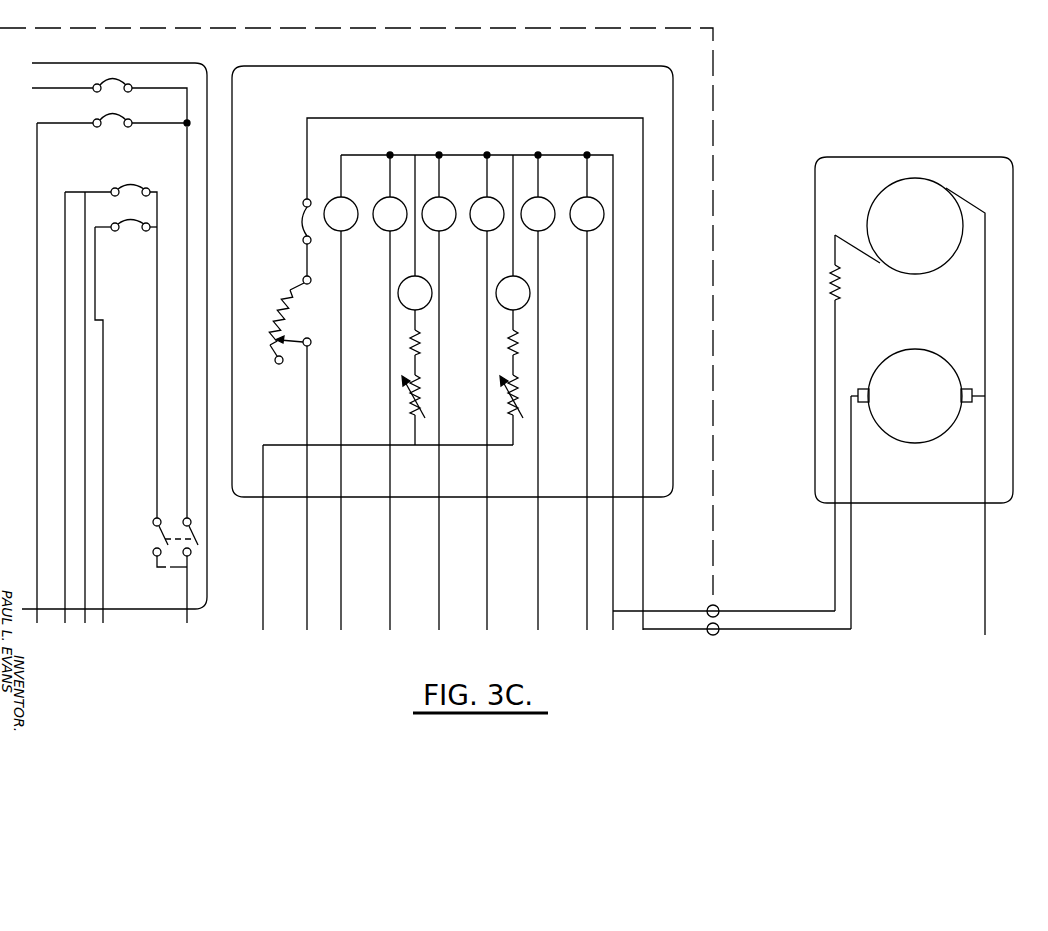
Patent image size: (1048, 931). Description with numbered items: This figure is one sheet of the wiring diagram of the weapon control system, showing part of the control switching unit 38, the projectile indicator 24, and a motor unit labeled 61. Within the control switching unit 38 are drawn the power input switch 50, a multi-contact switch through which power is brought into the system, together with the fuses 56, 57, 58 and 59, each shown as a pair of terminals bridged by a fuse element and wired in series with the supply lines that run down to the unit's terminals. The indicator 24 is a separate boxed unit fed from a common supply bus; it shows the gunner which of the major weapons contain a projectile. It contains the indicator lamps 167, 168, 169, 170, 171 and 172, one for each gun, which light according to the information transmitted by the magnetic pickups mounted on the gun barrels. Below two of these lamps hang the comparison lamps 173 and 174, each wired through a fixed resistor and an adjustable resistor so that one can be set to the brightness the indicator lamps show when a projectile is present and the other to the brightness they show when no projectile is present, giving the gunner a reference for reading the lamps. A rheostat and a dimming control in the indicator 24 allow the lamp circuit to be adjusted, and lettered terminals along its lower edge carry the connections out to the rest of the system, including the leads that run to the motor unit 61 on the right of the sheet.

The control switching unit 38 is at (153, 63).
The fuse 56 is at (113, 80).
The fuse 57 is at (114, 116).
The fuse 58 is at (129, 184).
The fuse 59 is at (135, 219).
The power input switch 50 is at (163, 537).
The indicator 24 is at (674, 91).
The indicator lamp 167 is at (334, 199).
The indicator lamp 168 is at (383, 199).
The indicator lamp 169 is at (443, 198).
The indicator lamp 170 is at (489, 198).
The indicator lamp 171 is at (541, 198).
The indicator lamp 172 is at (590, 198).
The comparison lamp 173 is at (419, 276).
The comparison lamp 174 is at (517, 276).
The motor 61 is at (934, 430).